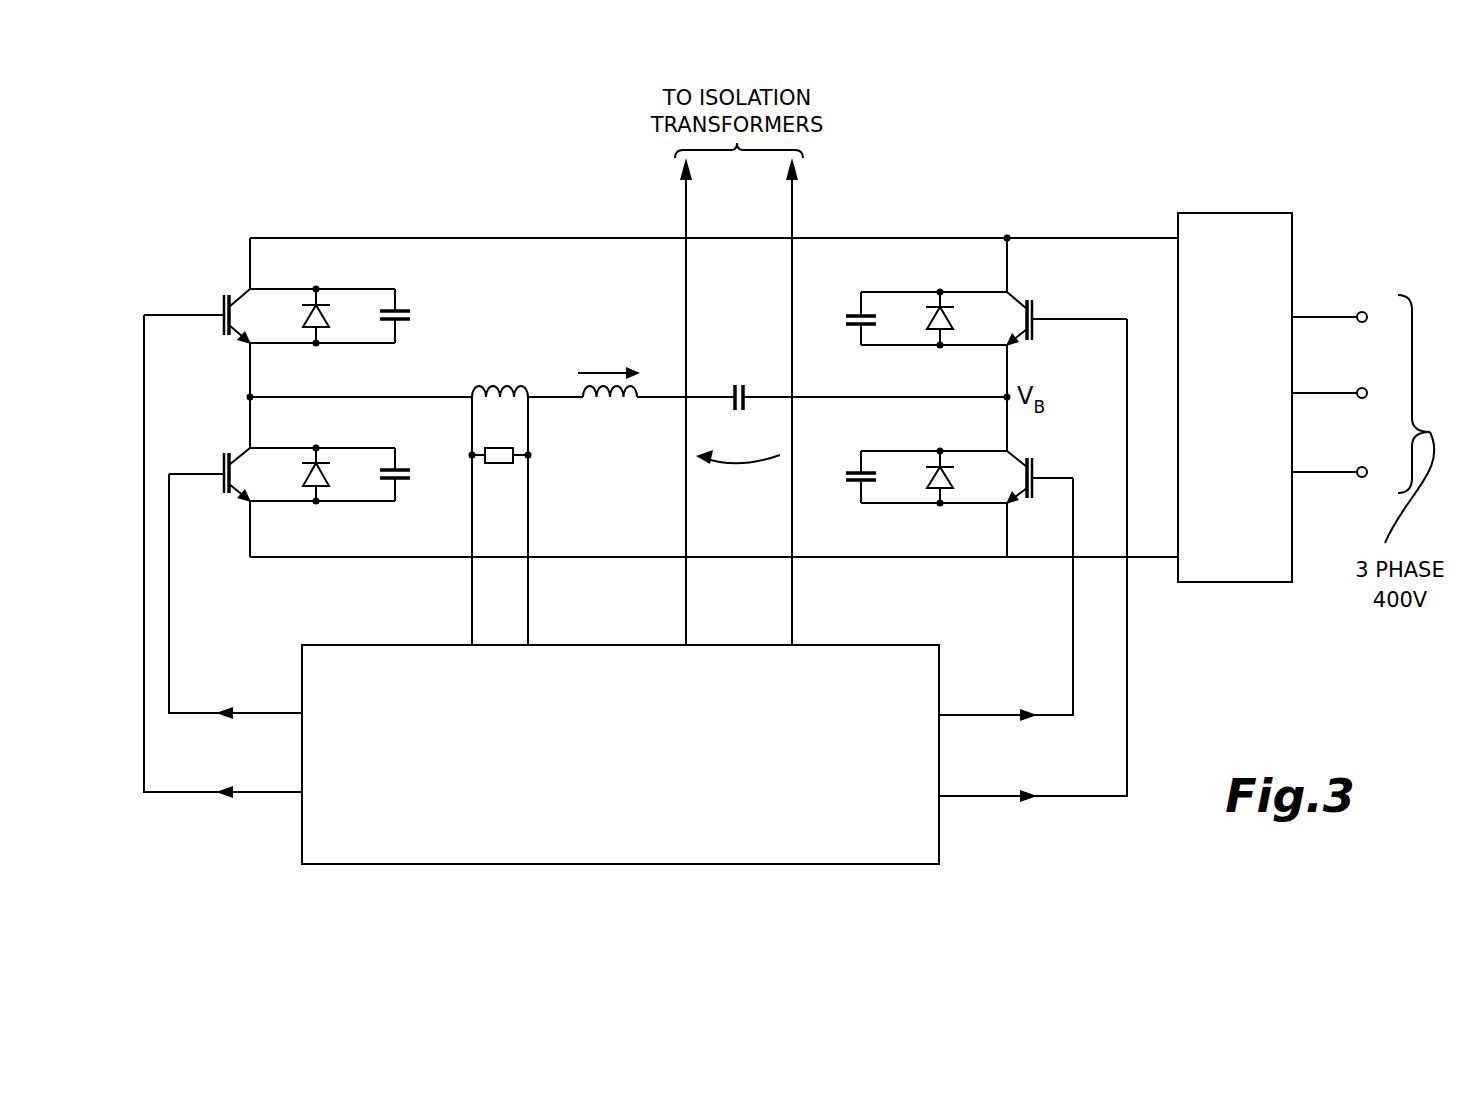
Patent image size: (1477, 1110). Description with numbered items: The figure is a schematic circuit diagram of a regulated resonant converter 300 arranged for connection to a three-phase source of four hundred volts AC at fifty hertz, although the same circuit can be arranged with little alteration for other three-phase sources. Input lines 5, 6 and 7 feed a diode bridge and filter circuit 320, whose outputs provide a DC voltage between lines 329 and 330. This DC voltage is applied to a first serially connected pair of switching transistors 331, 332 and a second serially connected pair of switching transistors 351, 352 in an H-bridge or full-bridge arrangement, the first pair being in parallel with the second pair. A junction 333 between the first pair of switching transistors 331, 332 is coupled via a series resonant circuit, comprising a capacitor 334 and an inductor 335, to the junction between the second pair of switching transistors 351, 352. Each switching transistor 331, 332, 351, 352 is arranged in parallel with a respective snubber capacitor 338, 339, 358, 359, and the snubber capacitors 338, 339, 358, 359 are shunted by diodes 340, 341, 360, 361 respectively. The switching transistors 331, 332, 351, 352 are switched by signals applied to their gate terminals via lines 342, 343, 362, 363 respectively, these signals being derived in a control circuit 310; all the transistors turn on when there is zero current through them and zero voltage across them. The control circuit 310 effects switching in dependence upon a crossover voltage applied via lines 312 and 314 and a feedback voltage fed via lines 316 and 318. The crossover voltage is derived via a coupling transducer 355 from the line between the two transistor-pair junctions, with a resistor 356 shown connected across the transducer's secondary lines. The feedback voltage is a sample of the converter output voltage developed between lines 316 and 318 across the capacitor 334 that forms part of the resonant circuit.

The resonant converter 300 is at (1022, 195).
The control circuit 310 is at (620, 754).
The line 312 is at (472, 595).
The line 314 is at (528, 628).
The line 316 is at (686, 596).
The line 318 is at (792, 615).
The diode bridge and filter circuit 320 is at (1235, 397).
The line 329 is at (1172, 236).
The line 330 is at (1170, 560).
The switching transistor 331 is at (226, 296).
The switching transistor 332 is at (227, 503).
The junction 333 is at (249, 396).
The capacitor 334 is at (748, 385).
The inductor 335 is at (637, 390).
The snubber capacitor 338 is at (405, 308).
The snubber capacitor 339 is at (407, 480).
The diode 340 is at (330, 317).
The diode 341 is at (327, 477).
The line 342 is at (248, 794).
The line 343 is at (250, 712).
The switching transistor 351 is at (1030, 298).
The switching transistor 352 is at (1028, 503).
The coupling transducer 355 is at (477, 390).
The burden resistor 356 is at (497, 463).
The snubber capacitor 358 is at (853, 311).
The snubber capacitor 359 is at (853, 470).
The diode 360 is at (950, 322).
The diode 361 is at (930, 479).
The line 362 is at (990, 798).
The line 363 is at (990, 714).
The input line 5 is at (1335, 317).
The input line 6 is at (1327, 393).
The input line 7 is at (1328, 472).